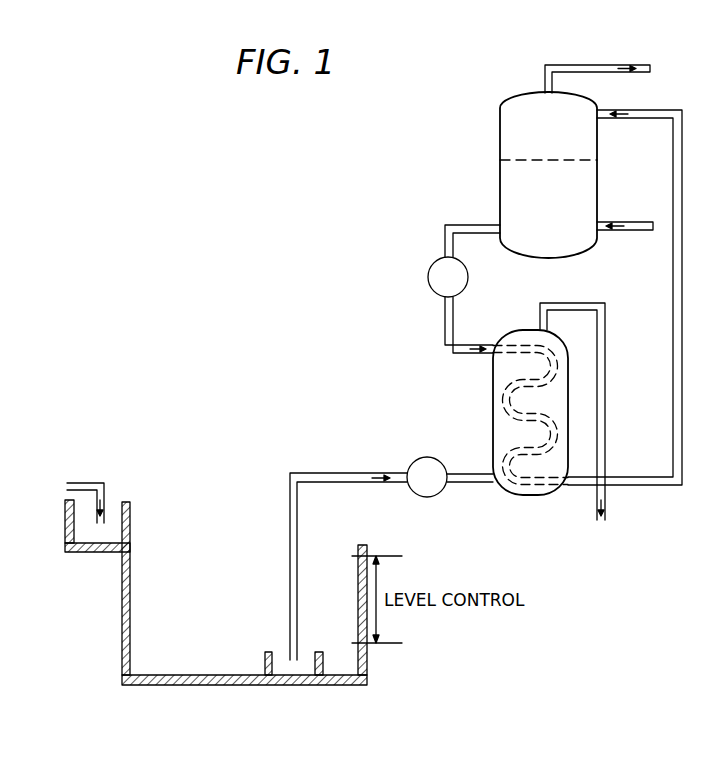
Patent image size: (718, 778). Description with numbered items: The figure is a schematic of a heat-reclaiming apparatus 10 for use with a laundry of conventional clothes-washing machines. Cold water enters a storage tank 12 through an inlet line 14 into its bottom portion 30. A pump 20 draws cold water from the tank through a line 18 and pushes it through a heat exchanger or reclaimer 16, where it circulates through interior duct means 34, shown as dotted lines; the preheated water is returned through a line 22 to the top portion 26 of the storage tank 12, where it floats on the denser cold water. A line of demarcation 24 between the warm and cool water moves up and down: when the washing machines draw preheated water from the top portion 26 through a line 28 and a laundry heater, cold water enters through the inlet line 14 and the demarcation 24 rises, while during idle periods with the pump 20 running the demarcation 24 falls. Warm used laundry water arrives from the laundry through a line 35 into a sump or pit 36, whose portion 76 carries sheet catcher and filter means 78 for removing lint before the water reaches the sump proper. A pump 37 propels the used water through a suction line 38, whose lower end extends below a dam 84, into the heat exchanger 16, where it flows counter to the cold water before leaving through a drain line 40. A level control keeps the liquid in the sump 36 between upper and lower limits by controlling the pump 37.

The apparatus 10 is at (410, 441).
The storage tank 12 is at (500, 192).
The inlet line 14 is at (641, 232).
The heat exchanger 16 is at (493, 428).
The line 18 is at (445, 330).
The pump 20 is at (445, 255).
The line 22 is at (683, 288).
The line of demarcation 24 is at (512, 160).
The top portion 26 is at (560, 147).
The line 28 is at (545, 80).
The bottom portion 30 is at (560, 221).
The interior duct means 34 is at (528, 406).
The line 35 is at (104, 502).
The sump 36 is at (218, 635).
The pump 37 is at (412, 491).
The line 38 is at (462, 484).
The drain line 40 is at (605, 323).
The portion 76 is at (100, 541).
The sheet catcher and filter means 78 is at (130, 533).
The dam 84 is at (270, 647).